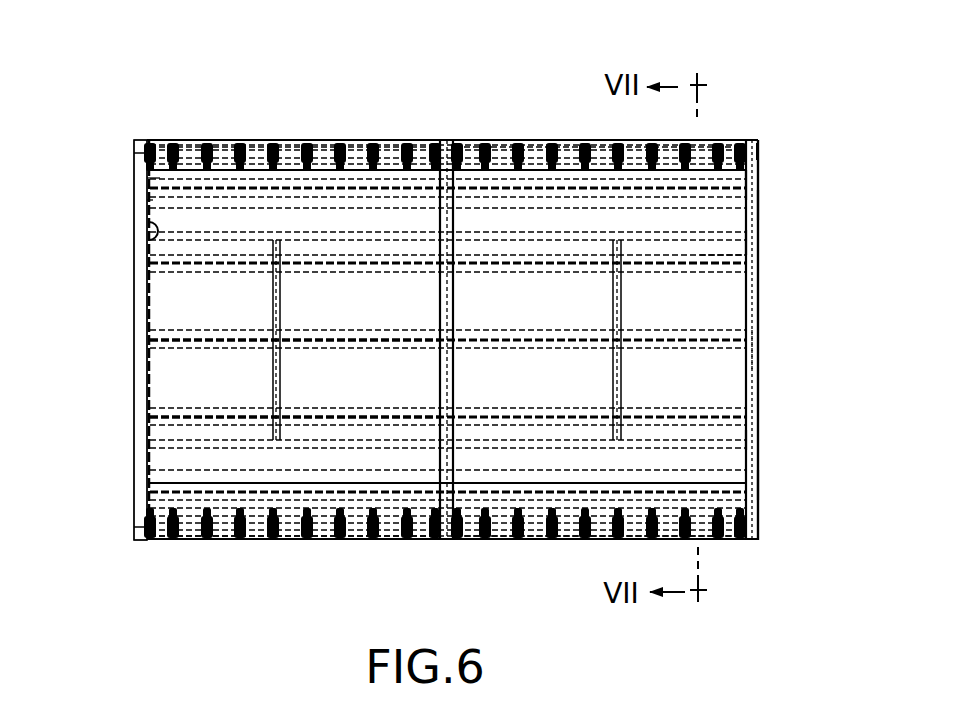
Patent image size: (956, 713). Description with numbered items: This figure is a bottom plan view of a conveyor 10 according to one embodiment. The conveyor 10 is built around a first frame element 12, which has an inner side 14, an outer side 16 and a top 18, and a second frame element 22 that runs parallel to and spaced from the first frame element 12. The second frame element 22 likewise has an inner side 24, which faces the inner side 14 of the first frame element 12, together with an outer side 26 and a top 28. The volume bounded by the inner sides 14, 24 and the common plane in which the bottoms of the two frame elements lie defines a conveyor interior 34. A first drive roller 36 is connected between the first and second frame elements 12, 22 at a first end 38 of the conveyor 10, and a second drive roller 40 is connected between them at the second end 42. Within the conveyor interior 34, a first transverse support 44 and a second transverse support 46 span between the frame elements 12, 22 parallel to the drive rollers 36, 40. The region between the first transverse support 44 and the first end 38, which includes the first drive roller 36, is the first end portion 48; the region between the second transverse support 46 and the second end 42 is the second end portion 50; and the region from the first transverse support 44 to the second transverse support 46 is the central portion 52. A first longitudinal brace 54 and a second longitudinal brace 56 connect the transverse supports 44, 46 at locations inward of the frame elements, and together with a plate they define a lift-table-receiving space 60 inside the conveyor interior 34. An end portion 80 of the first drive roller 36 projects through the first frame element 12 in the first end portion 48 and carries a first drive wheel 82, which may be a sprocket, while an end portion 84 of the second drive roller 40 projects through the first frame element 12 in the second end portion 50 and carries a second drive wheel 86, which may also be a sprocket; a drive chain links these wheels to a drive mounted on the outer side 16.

The conveyor 10 is at (304, 105).
The first frame element 12 is at (765, 222).
The inner side 14 is at (746, 188).
The outer side 16 is at (758, 205).
The top 18 is at (750, 243).
The second frame element 22 is at (118, 253).
The inner side 24 is at (152, 232).
The outer side 26 is at (135, 200).
The top 28 is at (140, 182).
The conveyor interior 34 is at (185, 388).
The first drive roller 36 is at (570, 140).
The first end 38 is at (491, 130).
The second drive roller 40 is at (541, 540).
The second end 42 is at (406, 553).
The first transverse support 44 is at (737, 256).
The second transverse support 46 is at (742, 440).
The first end portion 48 is at (771, 177).
The second end portion 50 is at (768, 485).
The central portion 52 is at (780, 357).
The first longitudinal brace 54 is at (615, 396).
The second longitudinal brace 56 is at (275, 297).
The lift-table-receiving space 60 is at (330, 375).
The end portion 80 is at (746, 145).
The first drive wheel 82 is at (757, 143).
The end portion 84 is at (746, 540).
The second drive wheel 86 is at (753, 537).